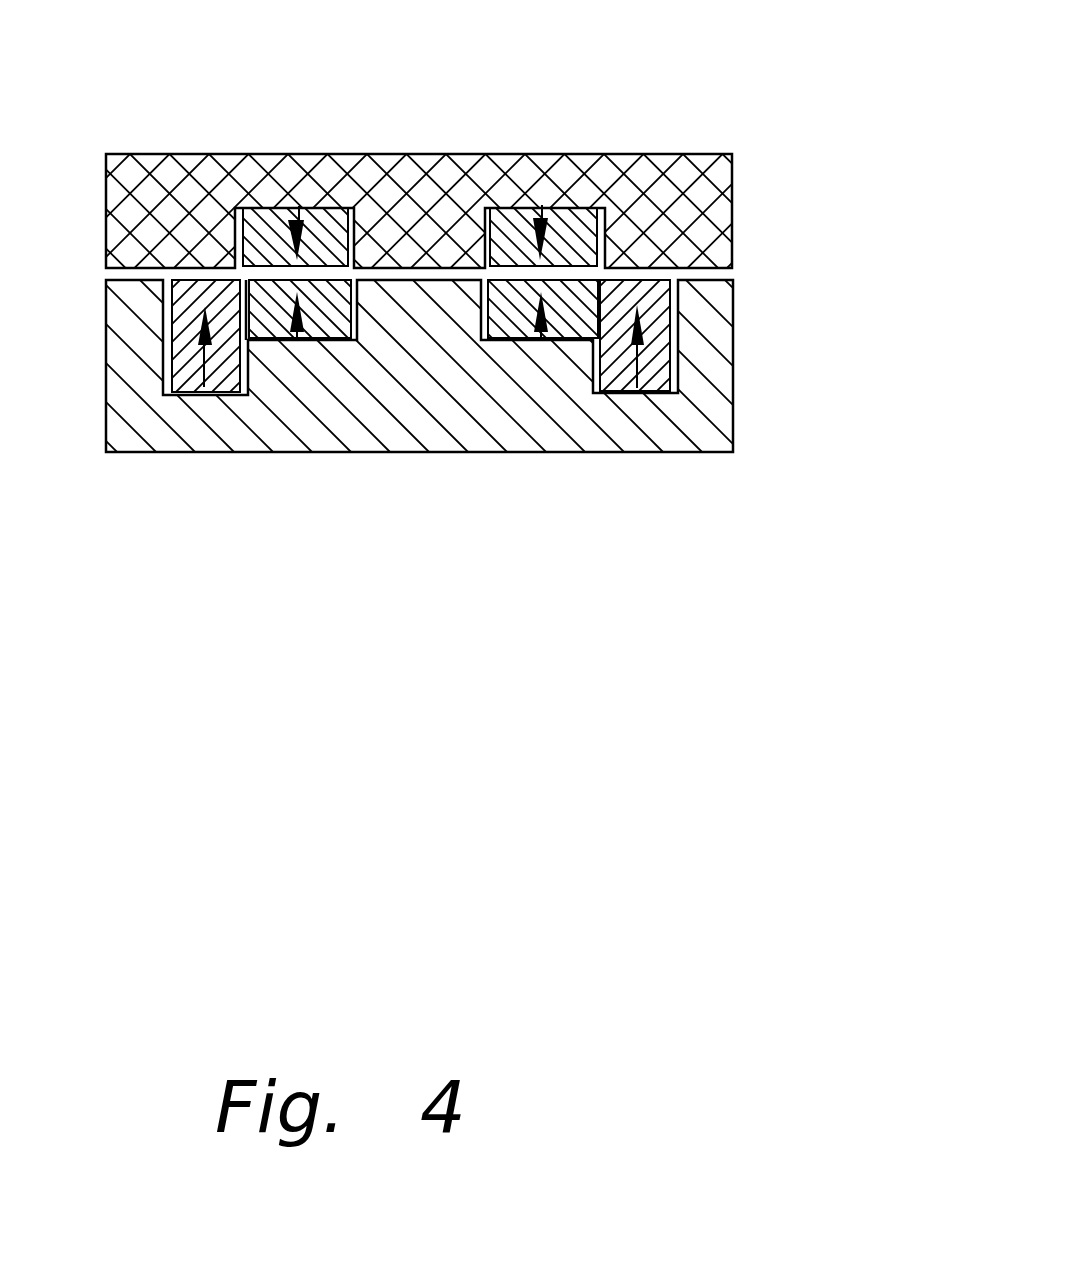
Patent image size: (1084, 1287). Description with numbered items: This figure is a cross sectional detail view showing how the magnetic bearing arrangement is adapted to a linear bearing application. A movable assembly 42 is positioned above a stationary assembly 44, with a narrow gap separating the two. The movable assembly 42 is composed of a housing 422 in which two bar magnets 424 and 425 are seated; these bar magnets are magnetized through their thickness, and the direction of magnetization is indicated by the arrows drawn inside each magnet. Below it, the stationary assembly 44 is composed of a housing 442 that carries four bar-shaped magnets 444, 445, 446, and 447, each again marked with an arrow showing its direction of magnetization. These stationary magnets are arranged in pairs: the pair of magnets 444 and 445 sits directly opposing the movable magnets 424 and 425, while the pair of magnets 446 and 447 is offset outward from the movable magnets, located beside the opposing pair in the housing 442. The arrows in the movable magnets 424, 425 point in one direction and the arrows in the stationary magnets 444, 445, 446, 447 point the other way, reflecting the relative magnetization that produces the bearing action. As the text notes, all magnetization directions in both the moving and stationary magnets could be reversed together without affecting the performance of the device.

The movable assembly 42 is at (477, 138).
The stationary assembly 44 is at (470, 461).
The housing 422 is at (427, 138).
The bar magnet 424 is at (241, 142).
The bar magnet 425 is at (599, 141).
The housing 442 is at (448, 461).
The bar-shaped magnet 444 is at (258, 445).
The bar-shaped magnet 445 is at (582, 444).
The bar-shaped magnet 446 is at (190, 412).
The bar-shaped magnet 447 is at (647, 402).